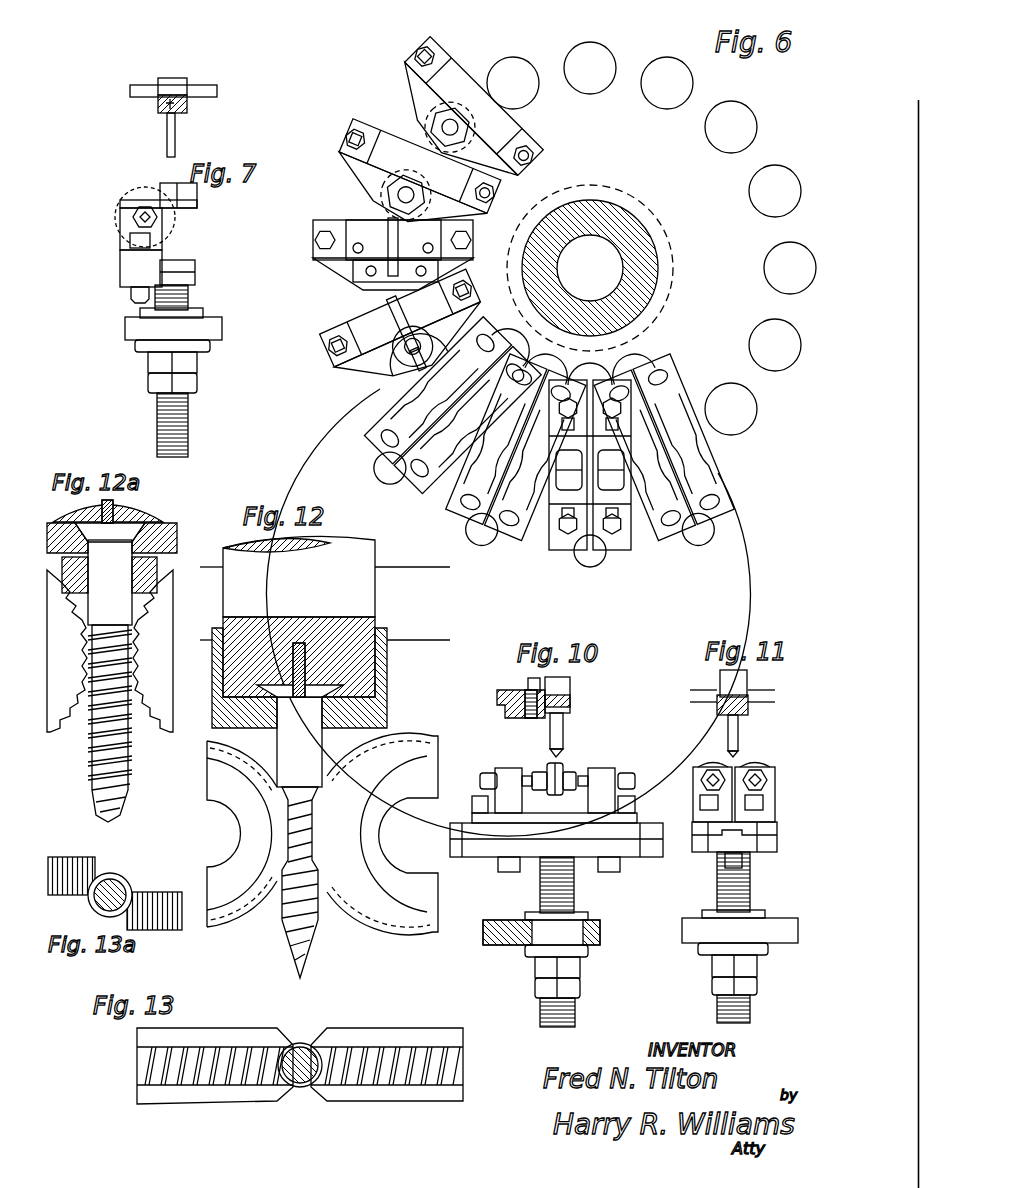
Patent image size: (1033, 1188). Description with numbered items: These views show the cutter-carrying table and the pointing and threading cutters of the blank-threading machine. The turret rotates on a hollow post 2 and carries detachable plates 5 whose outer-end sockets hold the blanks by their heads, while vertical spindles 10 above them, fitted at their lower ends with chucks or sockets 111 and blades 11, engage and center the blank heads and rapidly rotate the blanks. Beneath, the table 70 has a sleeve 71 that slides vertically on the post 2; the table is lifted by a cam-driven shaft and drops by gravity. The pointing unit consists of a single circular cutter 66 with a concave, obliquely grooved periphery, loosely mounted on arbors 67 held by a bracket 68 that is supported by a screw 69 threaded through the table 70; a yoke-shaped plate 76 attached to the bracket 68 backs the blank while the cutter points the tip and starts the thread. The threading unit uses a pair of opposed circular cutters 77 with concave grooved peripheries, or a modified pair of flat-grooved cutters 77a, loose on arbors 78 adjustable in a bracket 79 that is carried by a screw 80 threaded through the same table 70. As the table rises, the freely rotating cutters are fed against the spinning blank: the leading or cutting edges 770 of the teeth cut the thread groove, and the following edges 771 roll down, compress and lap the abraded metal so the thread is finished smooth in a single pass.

In FIG. 6, the hollow post 2 is at (673, 268).
In FIG. 7, the plates 5 is at (158, 110).
In FIG. 12, the plates 5 is at (392, 698).
In FIG. 10, the plates 5 is at (520, 718).
In FIG. 11, the plates 5 is at (717, 712).
In FIG. 7, the spindles 10 is at (188, 80).
In FIG. 12, the spindles 10 is at (299, 757).
In FIG. 10, the spindles 10 is at (571, 684).
In FIG. 11, the spindles 10 is at (749, 678).
In FIG. 7, the blades 11 is at (189, 103).
In FIG. 12, the blades 11 is at (376, 622).
In FIG. 10, the blades 11 is at (572, 706).
In FIG. 11, the blades 11 is at (750, 710).
In FIG. 12, the chucks or sockets 111 is at (380, 680).
In FIG. 6, the circular cutter 66 is at (362, 312).
In FIG. 7, the circular cutter 66 is at (143, 190).
In FIG. 6, the arbors 67 is at (378, 362).
In FIG. 7, the arbors 67 is at (131, 217).
In FIG. 6, the bracket 68 is at (398, 124).
In FIG. 7, the bracket 68 is at (122, 256).
In FIG. 6, the screw 69 is at (396, 374).
In FIG. 7, the screw 69 is at (190, 297).
In FIG. 6, the table 70 is at (382, 418).
In FIG. 7, the table 70 is at (125, 327).
In FIG. 10, the table 70 is at (600, 922).
In FIG. 11, the table 70 is at (797, 920).
In FIG. 6, the sleeve 71 is at (620, 192).
In FIG. 6, the yoke-shaped plate 76 is at (352, 286).
In FIG. 7, the yoke-shaped plate 76 is at (186, 206).
In FIG. 6, the circular cutters 77 is at (560, 470).
In FIG. 12, the circular cutters 77 is at (322, 834).
In FIG. 13, the circular cutters 77 is at (250, 1106).
In FIG. 10, the circular cutters 77 is at (554, 797).
In FIG. 11, the circular cutters 77 is at (713, 766).
In FIG. 12A, the circular cutters 77a is at (112, 661).
In FIG. 13A, the circular cutters 77a is at (90, 860).
In FIG. 6, the arbors 78 is at (566, 432).
In FIG. 10, the arbors 78 is at (530, 770).
In FIG. 11, the arbors 78 is at (700, 782).
In FIG. 6, the bracket 79 is at (460, 531).
In FIG. 10, the bracket 79 is at (620, 818).
In FIG. 11, the bracket 79 is at (780, 812).
In FIG. 10, the screw 80 is at (540, 892).
In FIG. 11, the screw 80 is at (752, 878).
In FIG. 13, the leading or cutting edges 770 is at (310, 1045).
In FIG. 13, the following edges 771 is at (294, 1042).